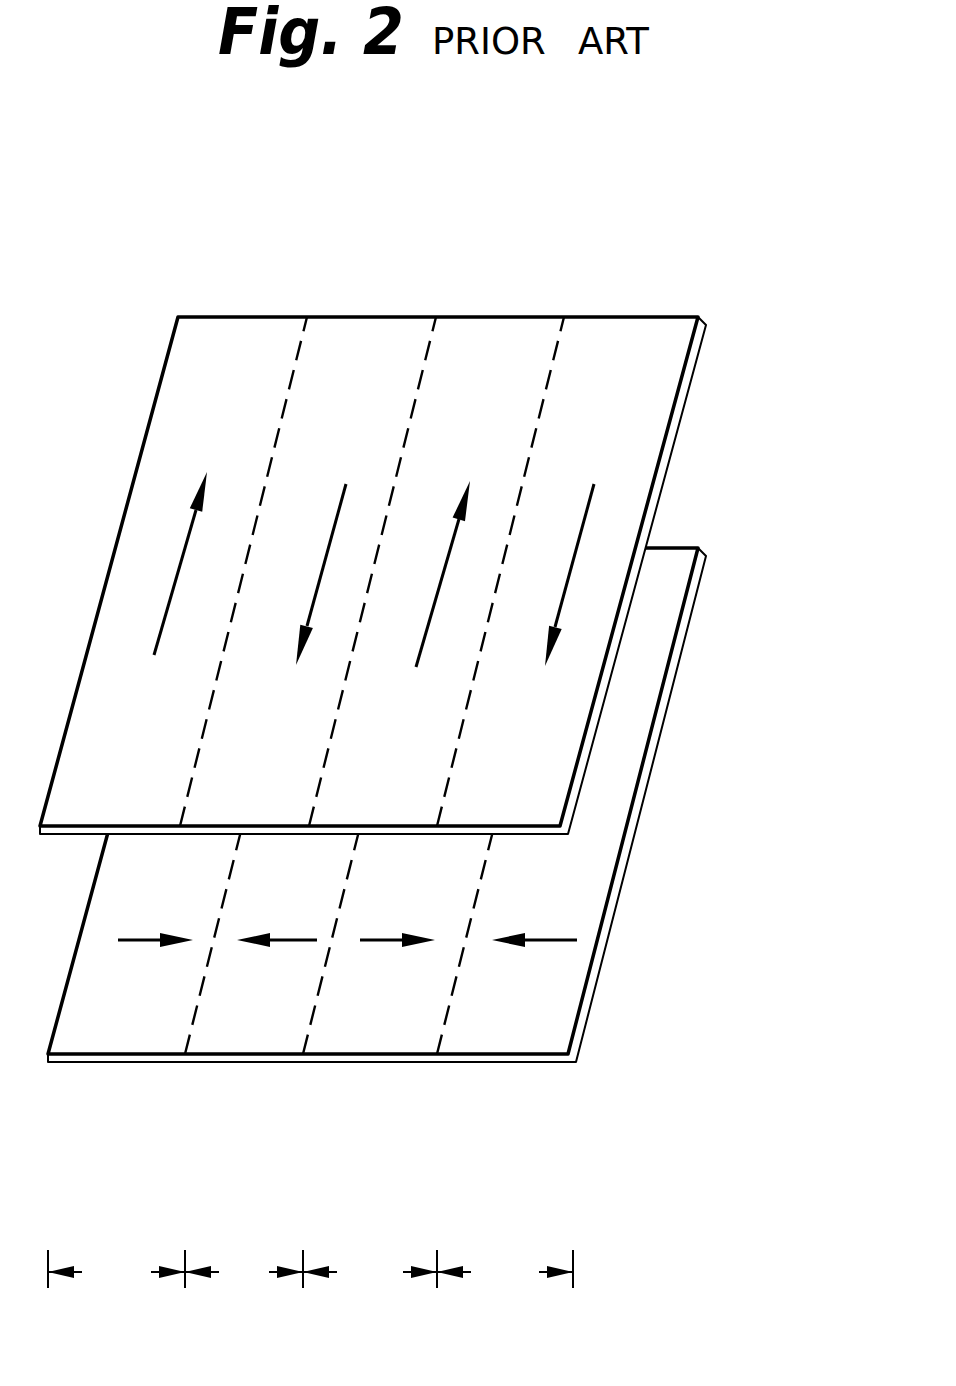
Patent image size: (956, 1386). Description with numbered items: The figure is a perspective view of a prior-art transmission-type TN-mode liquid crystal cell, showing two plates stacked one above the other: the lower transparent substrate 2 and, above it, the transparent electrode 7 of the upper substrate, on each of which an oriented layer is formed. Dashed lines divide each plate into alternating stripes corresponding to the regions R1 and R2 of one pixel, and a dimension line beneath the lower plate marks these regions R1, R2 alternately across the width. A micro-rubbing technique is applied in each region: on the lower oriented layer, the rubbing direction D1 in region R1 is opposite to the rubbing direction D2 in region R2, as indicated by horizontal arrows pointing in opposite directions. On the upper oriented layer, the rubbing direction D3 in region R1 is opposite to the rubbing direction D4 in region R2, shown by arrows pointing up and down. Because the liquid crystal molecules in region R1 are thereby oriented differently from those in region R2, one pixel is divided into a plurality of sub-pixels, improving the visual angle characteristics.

The transparent substrate 2 is at (593, 997).
The transparent electrode 7 is at (677, 444).
The rubbing direction D1 is at (137, 941).
The rubbing direction D2 is at (287, 942).
The rubbing direction D3 is at (188, 542).
The rubbing direction D4 is at (338, 520).
The region R1 is at (242, 1274).
The region R2 is at (379, 1274).